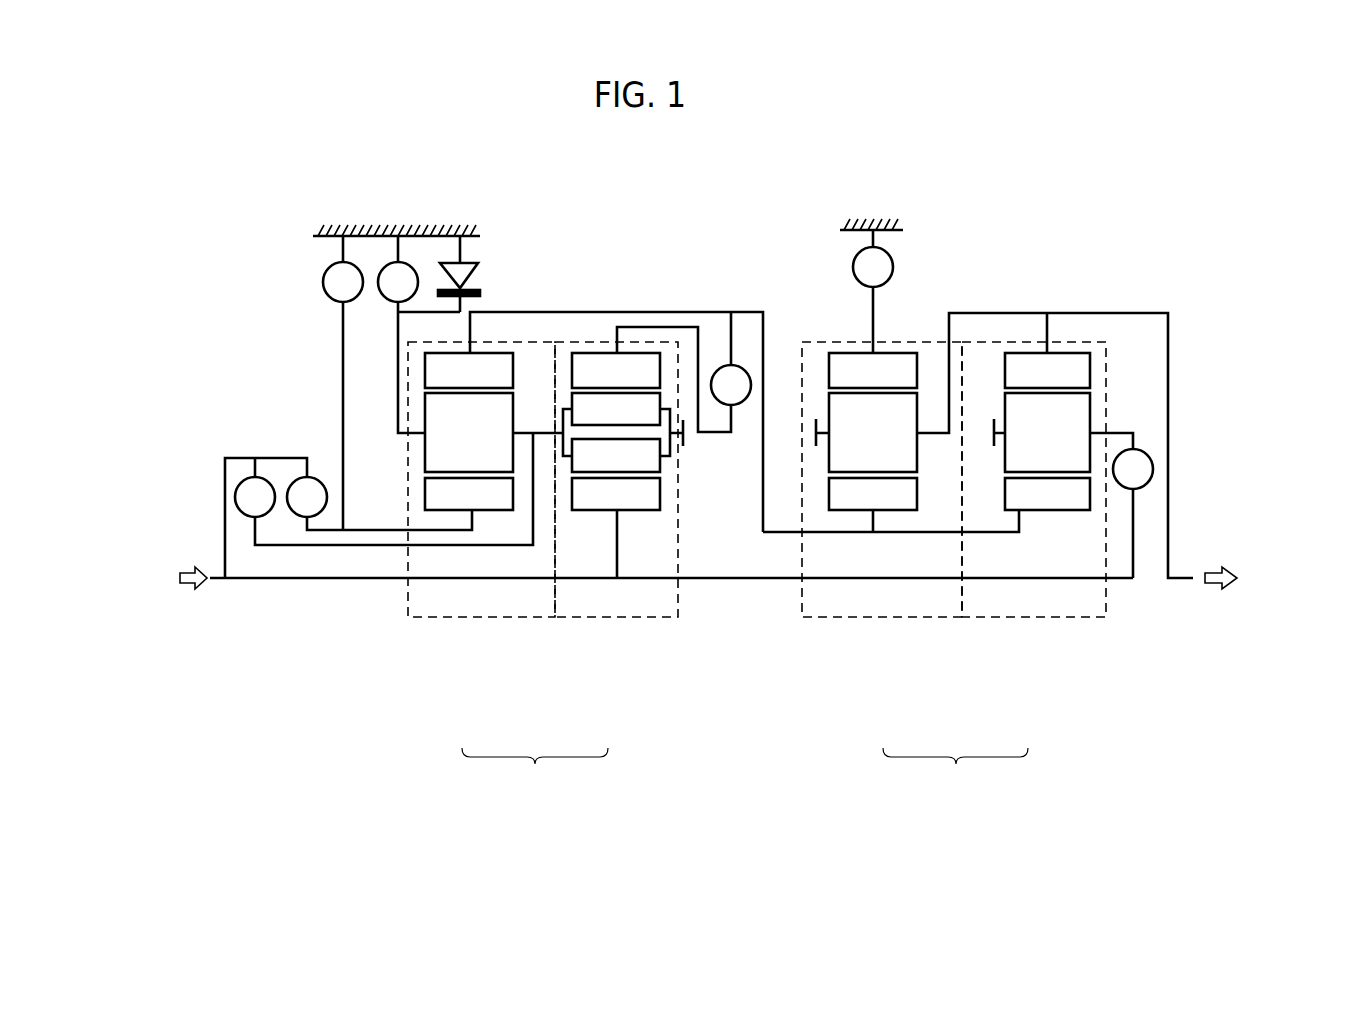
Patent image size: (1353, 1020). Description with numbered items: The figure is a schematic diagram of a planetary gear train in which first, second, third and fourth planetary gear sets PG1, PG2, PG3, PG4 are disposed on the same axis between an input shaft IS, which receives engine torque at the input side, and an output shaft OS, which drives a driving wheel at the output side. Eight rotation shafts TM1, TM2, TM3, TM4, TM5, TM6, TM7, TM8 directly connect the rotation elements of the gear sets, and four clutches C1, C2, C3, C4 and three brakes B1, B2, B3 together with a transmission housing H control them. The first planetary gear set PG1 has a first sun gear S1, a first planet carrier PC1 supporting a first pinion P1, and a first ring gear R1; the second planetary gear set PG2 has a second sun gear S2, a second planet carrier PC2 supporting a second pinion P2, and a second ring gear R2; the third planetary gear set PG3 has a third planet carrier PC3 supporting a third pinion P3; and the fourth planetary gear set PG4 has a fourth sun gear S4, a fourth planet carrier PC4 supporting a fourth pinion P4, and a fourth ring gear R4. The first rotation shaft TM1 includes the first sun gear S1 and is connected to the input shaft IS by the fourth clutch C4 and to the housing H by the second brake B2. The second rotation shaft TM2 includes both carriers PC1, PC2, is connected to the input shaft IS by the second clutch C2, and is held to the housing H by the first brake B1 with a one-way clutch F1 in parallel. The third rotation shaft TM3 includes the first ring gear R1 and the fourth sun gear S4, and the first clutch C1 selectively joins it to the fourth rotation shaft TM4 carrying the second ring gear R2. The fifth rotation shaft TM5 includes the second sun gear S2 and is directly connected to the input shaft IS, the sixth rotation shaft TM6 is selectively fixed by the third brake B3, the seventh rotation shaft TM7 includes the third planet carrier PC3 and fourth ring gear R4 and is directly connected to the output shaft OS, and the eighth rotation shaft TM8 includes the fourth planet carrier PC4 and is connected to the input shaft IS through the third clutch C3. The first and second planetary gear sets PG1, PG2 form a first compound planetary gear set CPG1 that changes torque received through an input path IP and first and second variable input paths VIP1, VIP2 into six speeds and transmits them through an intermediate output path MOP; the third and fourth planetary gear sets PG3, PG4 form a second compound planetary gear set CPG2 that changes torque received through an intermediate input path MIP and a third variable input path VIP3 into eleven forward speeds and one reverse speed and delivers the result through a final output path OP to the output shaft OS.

The transmission housing H is at (400, 235).
The first brake B1 is at (398, 269).
The second brake B2 is at (343, 269).
The third brake B3 is at (873, 258).
The one-way clutch F1 is at (453, 274).
The first clutch C1 is at (731, 358).
The second clutch C2 is at (255, 497).
The third clutch C3 is at (1133, 513).
The fourth clutch C4 is at (307, 497).
The first rotation shaft TM1 is at (357, 525).
The second rotation shaft TM2 is at (379, 478).
The third rotation shaft TM3 is at (648, 310).
The fourth rotation shaft TM4 is at (733, 418).
The fifth rotation shaft TM5 is at (619, 545).
The sixth rotation shaft TM6 is at (879, 312).
The seventh rotation shaft TM7 is at (998, 310).
The eighth rotation shaft TM8 is at (1135, 443).
The first planet carrier PC1 is at (412, 445).
The second planet carrier PC2 is at (672, 441).
The third planet carrier PC3 is at (822, 418).
The fourth planet carrier PC4 is at (1000, 440).
The first planetary gear set PG1 is at (481, 545).
The second planetary gear set PG2 is at (616, 545).
The third planetary gear set PG3 is at (882, 545).
The fourth planetary gear set PG4 is at (1034, 545).
The first compound planetary gear set CPG1 is at (535, 773).
The second compound planetary gear set CPG2 is at (955, 773).
The first ring gear R1 is at (469, 370).
The second ring gear R2 is at (616, 370).
The fourth ring gear R4 is at (1047, 370).
The first pinion P1 is at (469, 432).
The second pinion P2 is at (616, 432).
The third pinion P3 is at (873, 432).
The fourth pinion P4 is at (1047, 432).
The first sun gear S1 is at (469, 494).
The second sun gear S2 is at (616, 494).
The fourth sun gear S4 is at (1047, 494).
The input shaft IS is at (283, 582).
The output shaft OS is at (1170, 530).
The input path IP is at (528, 585).
The intermediate input path MIP is at (738, 534).
The intermediate output path MOP is at (781, 339).
The final output path OP is at (1158, 290).
The first variable input path VIP1 is at (440, 541).
The second variable input path VIP2 is at (543, 515).
The third variable input path VIP3 is at (1103, 419).
The element input is at (164, 577).
The element output is at (1252, 577).